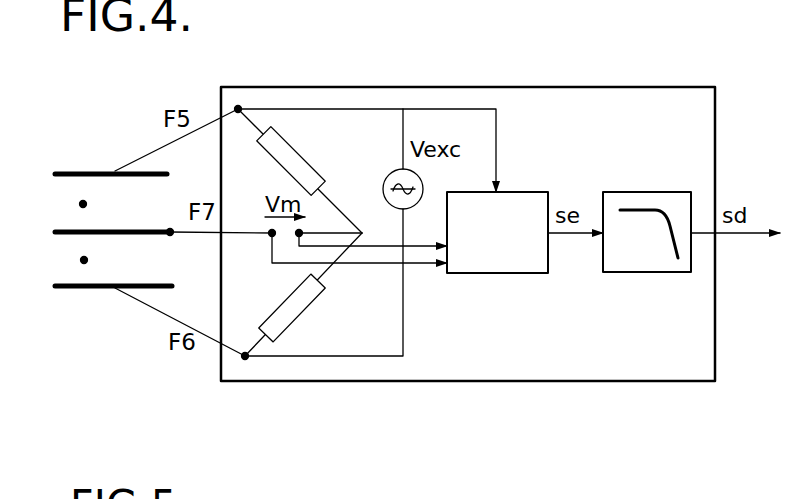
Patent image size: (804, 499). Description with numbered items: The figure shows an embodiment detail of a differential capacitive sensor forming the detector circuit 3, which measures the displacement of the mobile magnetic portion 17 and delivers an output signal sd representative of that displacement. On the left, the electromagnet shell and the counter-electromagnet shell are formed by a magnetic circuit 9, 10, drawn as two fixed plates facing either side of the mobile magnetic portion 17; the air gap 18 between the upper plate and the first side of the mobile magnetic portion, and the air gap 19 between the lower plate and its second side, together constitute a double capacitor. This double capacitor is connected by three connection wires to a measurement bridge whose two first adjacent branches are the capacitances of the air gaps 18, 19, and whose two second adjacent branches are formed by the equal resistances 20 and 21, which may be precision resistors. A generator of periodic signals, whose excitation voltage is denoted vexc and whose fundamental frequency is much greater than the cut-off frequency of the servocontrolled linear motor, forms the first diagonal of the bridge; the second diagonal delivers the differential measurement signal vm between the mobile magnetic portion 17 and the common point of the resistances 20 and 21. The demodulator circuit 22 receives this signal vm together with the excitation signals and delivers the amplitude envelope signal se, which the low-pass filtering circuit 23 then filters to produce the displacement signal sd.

The detector circuit 3 is at (663, 98).
The magnetic circuit 9 is at (55, 170).
The magnetic circuit 10 is at (75, 287).
The mobile magnetic portion 17 is at (55, 232).
The air gap 18 is at (83, 204).
The air gap 19 is at (84, 260).
The resistance 20 is at (298, 168).
The resistance 21 is at (295, 310).
The demodulator circuit 22 is at (495, 258).
The filtering circuit 23 is at (652, 242).